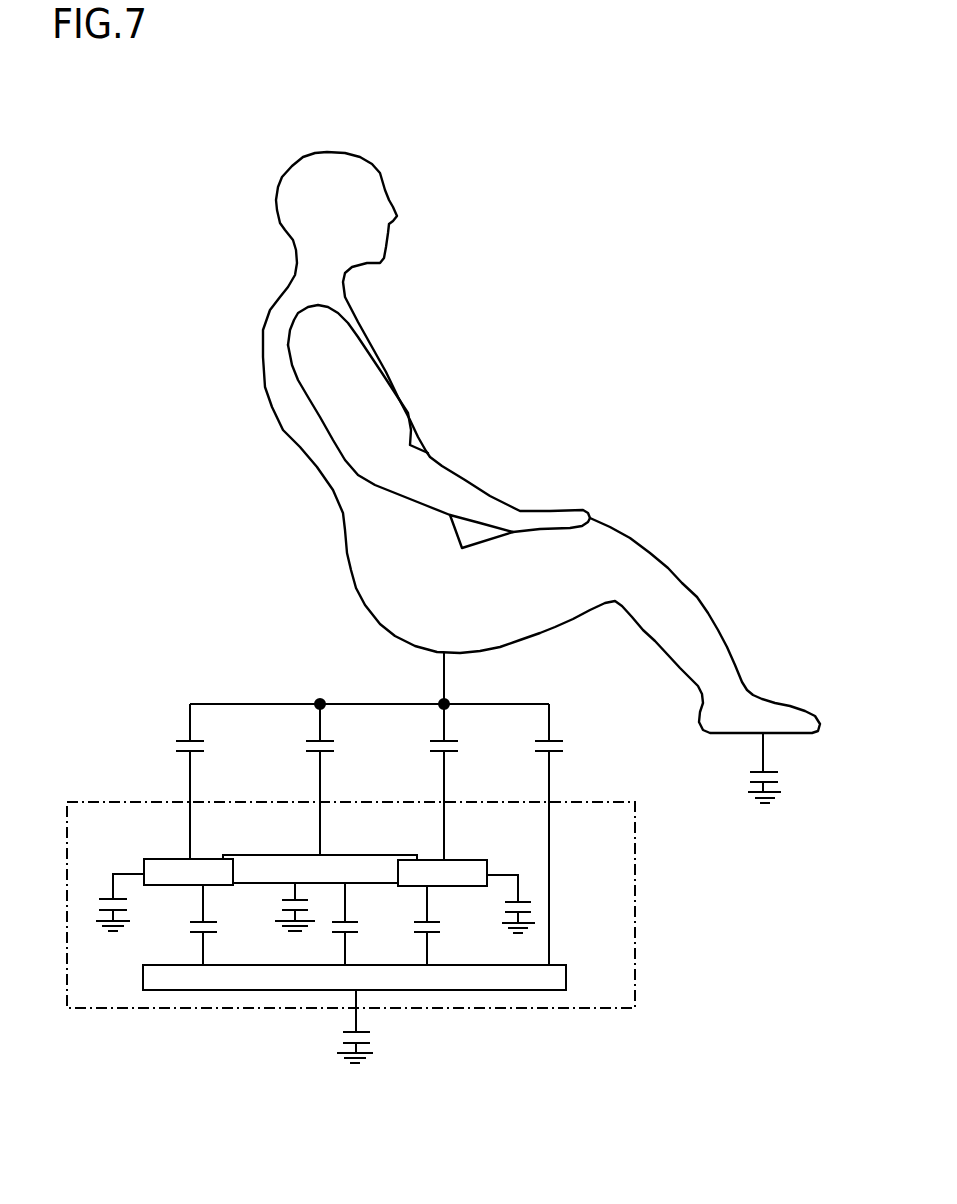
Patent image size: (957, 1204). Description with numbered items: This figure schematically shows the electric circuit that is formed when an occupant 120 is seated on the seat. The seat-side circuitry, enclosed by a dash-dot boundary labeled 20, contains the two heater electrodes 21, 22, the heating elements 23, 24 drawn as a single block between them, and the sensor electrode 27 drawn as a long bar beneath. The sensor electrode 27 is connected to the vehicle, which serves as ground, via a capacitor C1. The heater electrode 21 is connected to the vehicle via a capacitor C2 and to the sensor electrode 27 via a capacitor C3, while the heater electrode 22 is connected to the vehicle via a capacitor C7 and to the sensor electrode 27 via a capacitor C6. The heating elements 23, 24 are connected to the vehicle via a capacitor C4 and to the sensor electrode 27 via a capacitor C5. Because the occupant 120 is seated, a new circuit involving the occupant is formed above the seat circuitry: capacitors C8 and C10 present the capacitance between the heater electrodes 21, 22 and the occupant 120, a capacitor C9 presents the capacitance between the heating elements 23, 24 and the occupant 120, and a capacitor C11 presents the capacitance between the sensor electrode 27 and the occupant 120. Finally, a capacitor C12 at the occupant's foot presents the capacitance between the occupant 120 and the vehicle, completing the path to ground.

The occupant 120 is at (338, 152).
The capacitive occupant detection device 20 is at (63, 848).
The heater electrode 21 is at (143, 863).
The heater electrode 22 is at (488, 862).
The heating element 23 is at (320, 848).
The heating element 24 is at (387, 840).
The sensor electrode 27 is at (566, 972).
The capacitor C1 is at (370, 1026).
The capacitor C2 is at (129, 902).
The capacitor C3 is at (187, 925).
The capacitor C4 is at (282, 907).
The capacitor C5 is at (361, 924).
The capacitor C6 is at (443, 925).
The capacitor C7 is at (504, 904).
The capacitor C8 is at (174, 781).
The capacitor C9 is at (305, 779).
The capacitor C10 is at (422, 782).
The capacitor C11 is at (527, 834).
The capacitor C12 is at (785, 768).